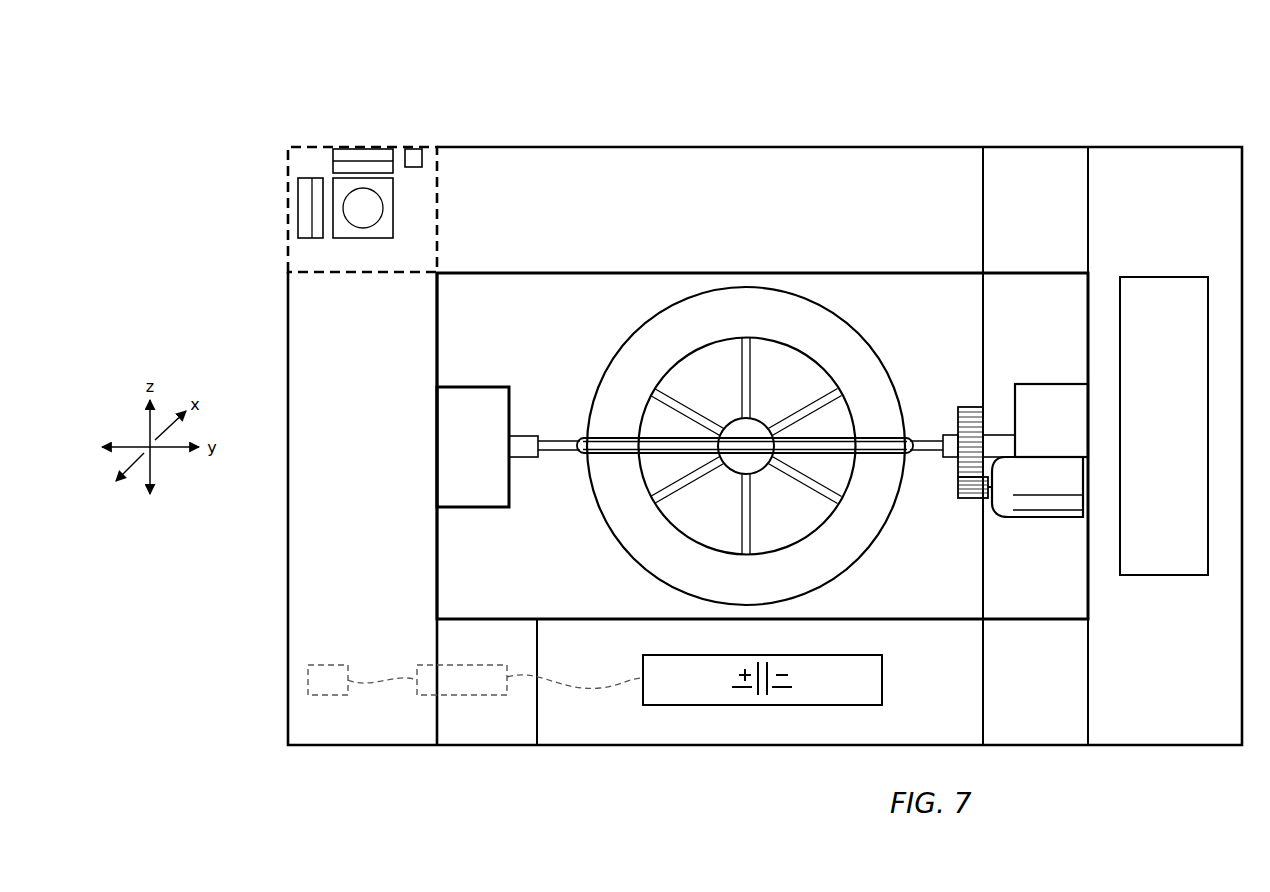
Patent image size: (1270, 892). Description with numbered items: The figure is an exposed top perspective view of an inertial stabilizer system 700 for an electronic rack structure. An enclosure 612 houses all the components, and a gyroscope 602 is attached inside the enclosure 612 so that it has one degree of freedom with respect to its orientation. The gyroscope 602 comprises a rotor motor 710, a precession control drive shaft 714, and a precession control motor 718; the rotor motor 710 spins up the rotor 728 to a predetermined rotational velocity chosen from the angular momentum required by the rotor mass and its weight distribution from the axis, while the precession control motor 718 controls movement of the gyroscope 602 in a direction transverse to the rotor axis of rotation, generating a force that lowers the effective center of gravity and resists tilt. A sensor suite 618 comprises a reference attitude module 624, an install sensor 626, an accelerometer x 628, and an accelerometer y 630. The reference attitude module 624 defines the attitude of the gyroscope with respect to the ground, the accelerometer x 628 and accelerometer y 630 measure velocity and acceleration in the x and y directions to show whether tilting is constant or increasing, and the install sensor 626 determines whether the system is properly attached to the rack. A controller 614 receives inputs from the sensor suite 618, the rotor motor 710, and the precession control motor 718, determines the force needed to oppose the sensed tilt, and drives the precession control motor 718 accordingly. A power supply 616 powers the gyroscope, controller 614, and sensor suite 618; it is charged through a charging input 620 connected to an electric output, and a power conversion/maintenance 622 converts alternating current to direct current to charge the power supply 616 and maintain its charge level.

The inertial stabilizer system 700 is at (886, 122).
The enclosure 612 is at (1116, 147).
The controller 614 is at (1165, 277).
The power supply 616 is at (882, 688).
The sensor suite 618 is at (285, 250).
The charging input 620 is at (330, 695).
The power conversion/maintenance 622 is at (465, 695).
The reference attitude module 624 is at (363, 238).
The install sensor 626 is at (415, 147).
The accelerometer x 628 is at (358, 147).
The accelerometer y 630 is at (298, 207).
The gyroscope 602 is at (582, 488).
The rotor motor 710 is at (737, 432).
The precession control drive shaft 714 is at (1003, 437).
The precession control motor 718 is at (1022, 518).
The rotor 728 is at (630, 552).